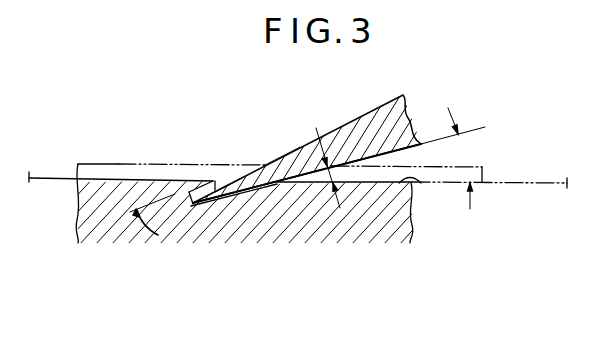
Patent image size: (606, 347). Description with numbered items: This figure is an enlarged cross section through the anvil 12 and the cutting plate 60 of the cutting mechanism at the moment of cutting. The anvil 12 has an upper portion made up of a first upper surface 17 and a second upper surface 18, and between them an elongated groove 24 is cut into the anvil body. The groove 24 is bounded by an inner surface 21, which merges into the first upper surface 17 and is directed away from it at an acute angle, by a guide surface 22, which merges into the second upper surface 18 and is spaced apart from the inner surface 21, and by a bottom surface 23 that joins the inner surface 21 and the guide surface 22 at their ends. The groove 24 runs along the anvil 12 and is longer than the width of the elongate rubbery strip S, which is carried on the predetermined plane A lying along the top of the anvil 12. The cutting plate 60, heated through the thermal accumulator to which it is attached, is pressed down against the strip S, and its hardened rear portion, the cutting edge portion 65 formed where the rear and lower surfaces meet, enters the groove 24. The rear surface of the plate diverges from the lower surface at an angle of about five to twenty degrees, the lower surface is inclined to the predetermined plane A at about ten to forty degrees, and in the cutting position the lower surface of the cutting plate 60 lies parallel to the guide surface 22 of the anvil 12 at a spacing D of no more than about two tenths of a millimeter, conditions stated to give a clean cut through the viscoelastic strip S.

The anvil 12 is at (62, 211).
The first upper surface 17 is at (78, 164).
The second upper surface 18 is at (413, 183).
The inner surface 21 is at (215, 188).
The guide surface 22 is at (251, 191).
The bottom surface 23 is at (200, 205).
The elongated groove 24 is at (205, 181).
The cutting plate 60 is at (382, 104).
The cutting edge portion 65 is at (227, 186).
The elongate rubbery strip S is at (107, 163).
The predetermined plane A is at (532, 182).
The distance D is at (324, 157).